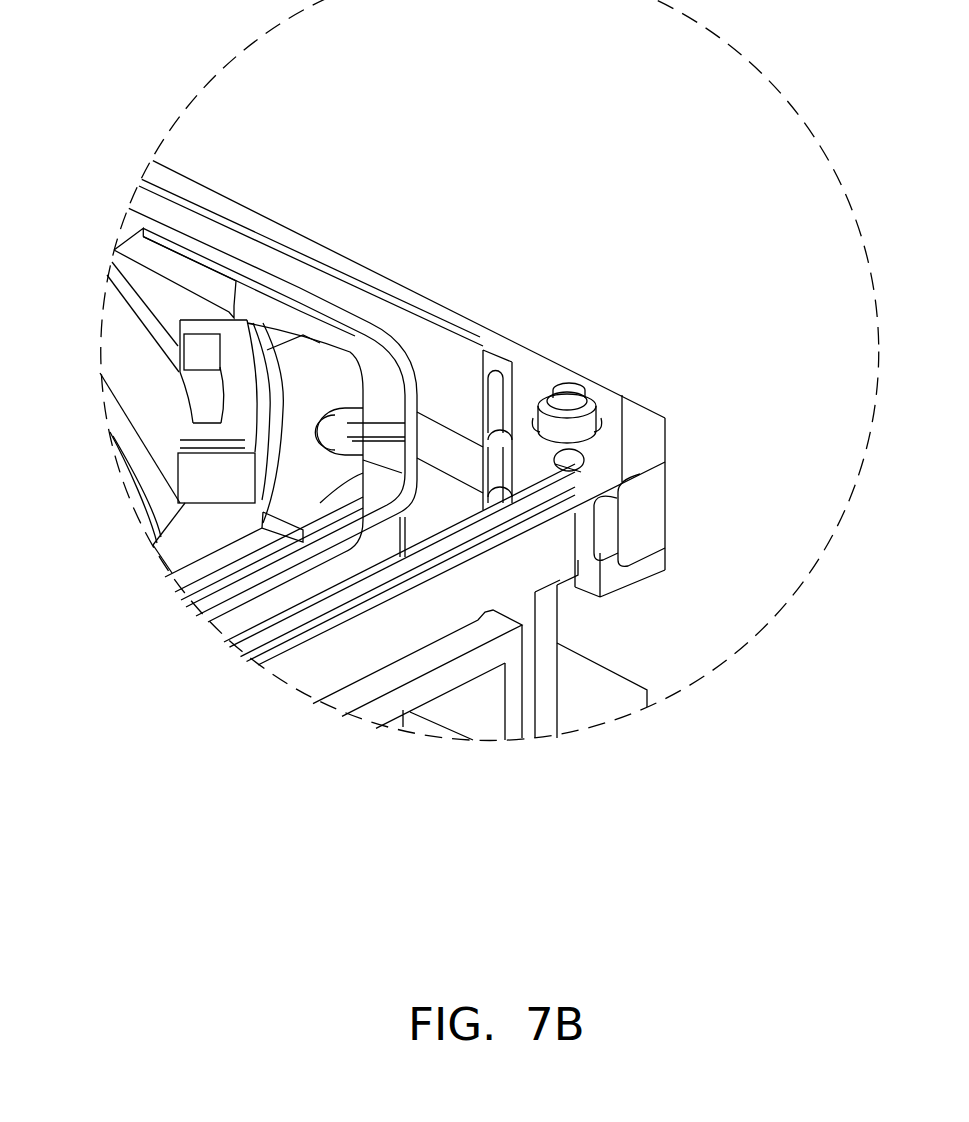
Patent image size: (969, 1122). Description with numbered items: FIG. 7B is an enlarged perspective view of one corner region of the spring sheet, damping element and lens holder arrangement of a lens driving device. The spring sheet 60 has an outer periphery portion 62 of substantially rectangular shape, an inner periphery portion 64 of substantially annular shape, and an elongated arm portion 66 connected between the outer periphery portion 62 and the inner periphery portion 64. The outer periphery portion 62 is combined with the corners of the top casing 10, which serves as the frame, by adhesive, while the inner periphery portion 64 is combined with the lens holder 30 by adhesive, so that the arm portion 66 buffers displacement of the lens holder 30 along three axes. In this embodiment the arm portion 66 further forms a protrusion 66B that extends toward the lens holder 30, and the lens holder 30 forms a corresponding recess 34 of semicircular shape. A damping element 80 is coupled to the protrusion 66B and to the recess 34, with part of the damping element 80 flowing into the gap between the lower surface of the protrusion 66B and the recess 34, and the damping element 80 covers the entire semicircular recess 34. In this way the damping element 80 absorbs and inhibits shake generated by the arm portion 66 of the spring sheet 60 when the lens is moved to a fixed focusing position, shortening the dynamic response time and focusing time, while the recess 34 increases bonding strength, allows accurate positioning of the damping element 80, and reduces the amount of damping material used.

The top casing 10 is at (667, 522).
The lens holder 30 is at (152, 453).
The recess 34 is at (300, 445).
The spring sheet 60 is at (389, 368).
The outer periphery portion 62 is at (370, 280).
The inner periphery portion 64 is at (183, 307).
The arm portion 66 is at (280, 290).
The protrusion 66B is at (330, 430).
The damping element 80 is at (345, 408).